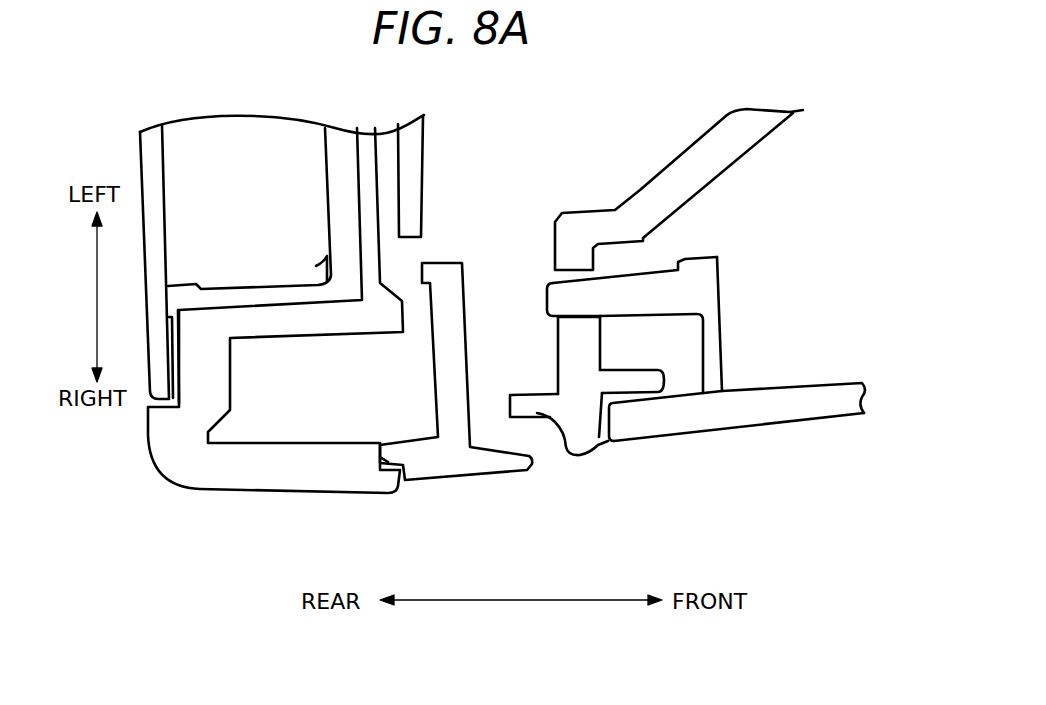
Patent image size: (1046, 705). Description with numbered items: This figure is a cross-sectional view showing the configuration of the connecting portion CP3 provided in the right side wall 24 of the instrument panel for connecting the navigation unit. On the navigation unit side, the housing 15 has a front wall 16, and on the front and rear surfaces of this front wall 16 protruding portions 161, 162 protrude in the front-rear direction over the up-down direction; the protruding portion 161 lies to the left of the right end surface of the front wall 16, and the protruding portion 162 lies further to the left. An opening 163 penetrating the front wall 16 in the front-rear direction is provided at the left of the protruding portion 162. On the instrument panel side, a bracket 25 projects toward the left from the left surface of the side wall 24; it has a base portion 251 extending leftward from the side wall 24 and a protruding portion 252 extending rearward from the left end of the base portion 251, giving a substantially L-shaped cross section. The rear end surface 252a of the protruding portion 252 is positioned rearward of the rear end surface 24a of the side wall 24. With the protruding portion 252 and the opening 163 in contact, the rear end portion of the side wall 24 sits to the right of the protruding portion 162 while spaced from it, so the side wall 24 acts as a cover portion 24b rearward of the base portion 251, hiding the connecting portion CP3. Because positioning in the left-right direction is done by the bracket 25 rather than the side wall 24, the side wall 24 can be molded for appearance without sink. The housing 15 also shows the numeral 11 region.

The cartridge housing 11 is at (277, 490).
The housing 15 is at (348, 494).
The front wall 16 is at (587, 378).
The protruding portion 161 is at (537, 417).
The protruding portion 162 is at (641, 394).
The opening 163 is at (576, 316).
The right side wall 24 is at (701, 447).
The rear end surface 24a is at (598, 438).
The cover portion 24b is at (684, 437).
The bracket 25 is at (623, 301).
The base portion 251 is at (723, 354).
The protruding portion 252 is at (653, 270).
The rear end surface 252a is at (547, 298).
The connecting portion CP3 is at (626, 170).